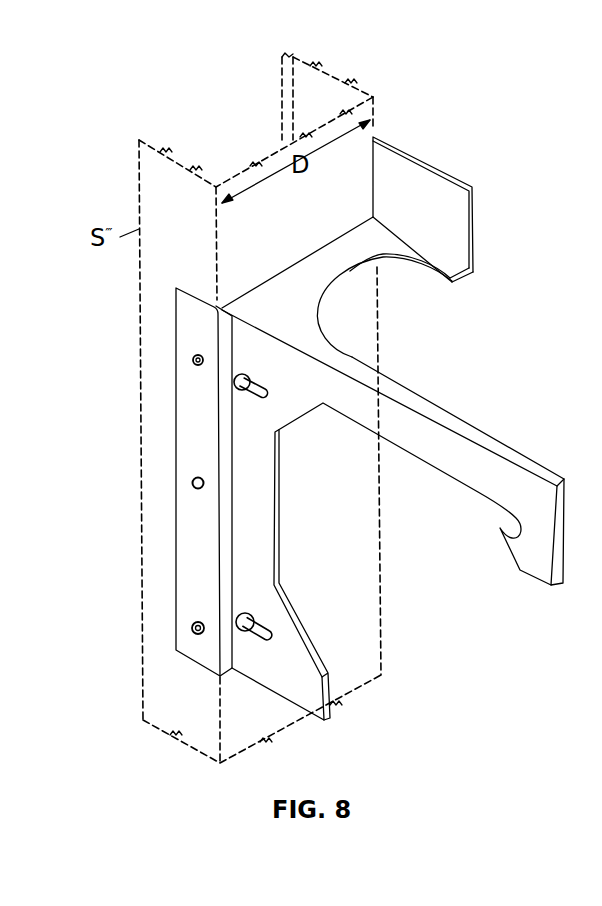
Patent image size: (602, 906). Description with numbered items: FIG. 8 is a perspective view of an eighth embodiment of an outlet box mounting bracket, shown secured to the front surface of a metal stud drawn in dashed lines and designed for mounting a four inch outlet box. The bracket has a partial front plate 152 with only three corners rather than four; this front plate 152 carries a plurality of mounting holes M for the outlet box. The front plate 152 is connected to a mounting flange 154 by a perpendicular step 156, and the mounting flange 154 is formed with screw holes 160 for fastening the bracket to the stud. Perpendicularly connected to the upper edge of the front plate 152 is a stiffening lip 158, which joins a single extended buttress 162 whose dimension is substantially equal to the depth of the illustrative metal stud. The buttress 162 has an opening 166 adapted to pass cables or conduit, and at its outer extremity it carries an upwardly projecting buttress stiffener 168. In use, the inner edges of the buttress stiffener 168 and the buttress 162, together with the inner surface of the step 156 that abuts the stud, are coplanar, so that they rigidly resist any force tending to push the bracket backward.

The front plate 152 is at (465, 458).
The mounting flange 154 is at (193, 327).
The perpendicular step 156 is at (226, 309).
The stiffening lip 158 is at (453, 414).
The screw holes 160 is at (204, 360).
The buttress 162 is at (463, 271).
The opening 166 is at (393, 262).
The buttress stiffener 168 is at (473, 211).
The mounting holes M is at (266, 388).